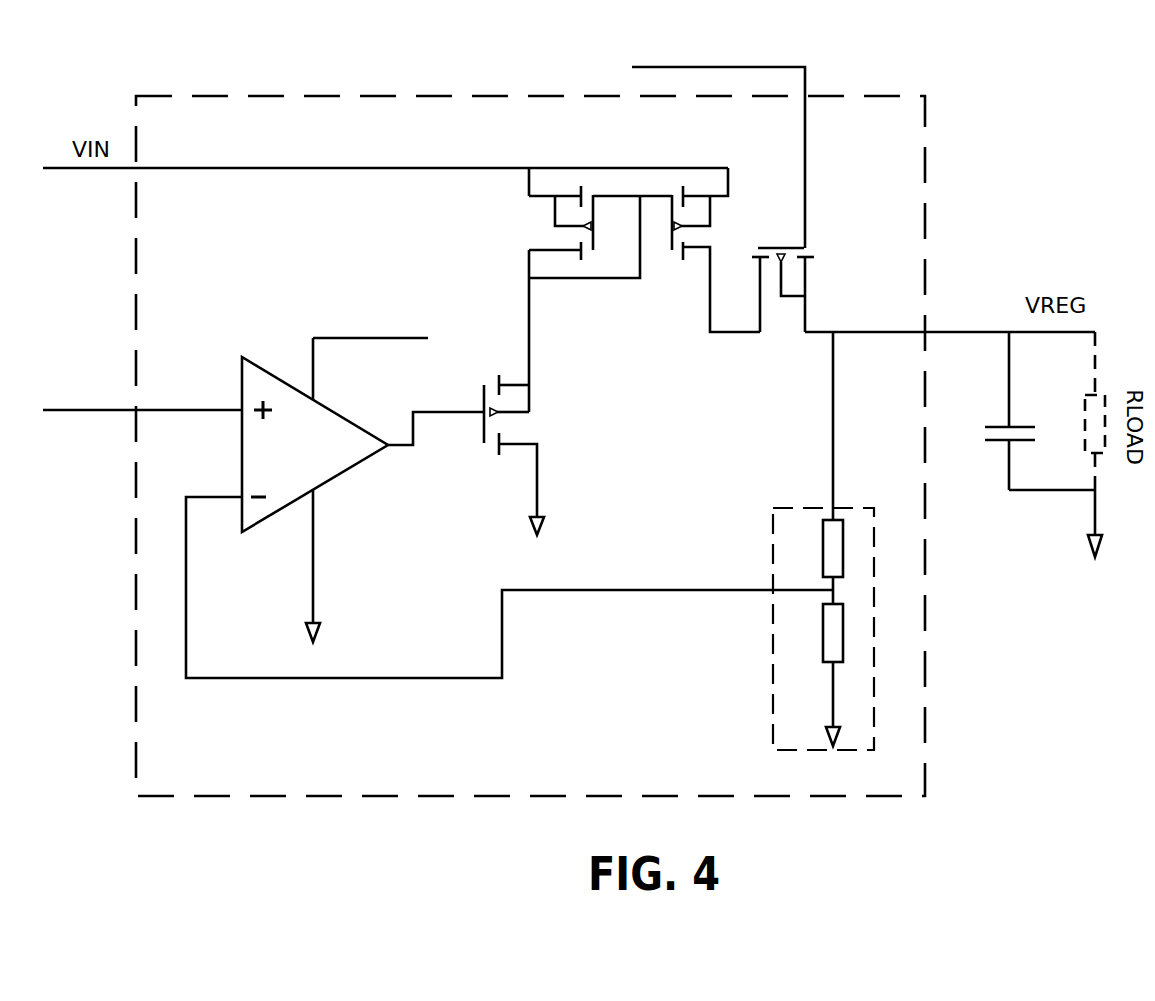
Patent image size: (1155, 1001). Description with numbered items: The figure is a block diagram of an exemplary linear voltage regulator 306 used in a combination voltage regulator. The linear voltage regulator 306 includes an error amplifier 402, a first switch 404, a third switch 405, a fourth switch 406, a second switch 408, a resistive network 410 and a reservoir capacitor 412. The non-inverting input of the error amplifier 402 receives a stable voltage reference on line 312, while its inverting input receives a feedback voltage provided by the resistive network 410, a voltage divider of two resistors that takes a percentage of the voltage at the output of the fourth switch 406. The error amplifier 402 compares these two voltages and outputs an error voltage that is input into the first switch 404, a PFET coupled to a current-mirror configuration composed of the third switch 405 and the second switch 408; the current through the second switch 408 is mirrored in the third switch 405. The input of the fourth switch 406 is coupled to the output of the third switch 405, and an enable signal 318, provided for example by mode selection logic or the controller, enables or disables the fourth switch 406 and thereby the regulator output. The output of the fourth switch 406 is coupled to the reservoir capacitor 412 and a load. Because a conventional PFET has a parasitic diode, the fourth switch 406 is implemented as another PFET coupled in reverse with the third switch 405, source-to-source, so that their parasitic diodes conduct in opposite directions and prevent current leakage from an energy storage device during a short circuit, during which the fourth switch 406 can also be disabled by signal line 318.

The linear voltage regulator 306 is at (243, 767).
The line 312 is at (162, 410).
The enable signal 318 is at (632, 67).
The error amplifier 402 is at (318, 453).
The switch 404 is at (484, 443).
The switch 405 is at (672, 236).
The switch 406 is at (805, 286).
The switch 408 is at (529, 251).
The resistive network 410 is at (773, 722).
The reservoir capacitor 412 is at (1001, 442).